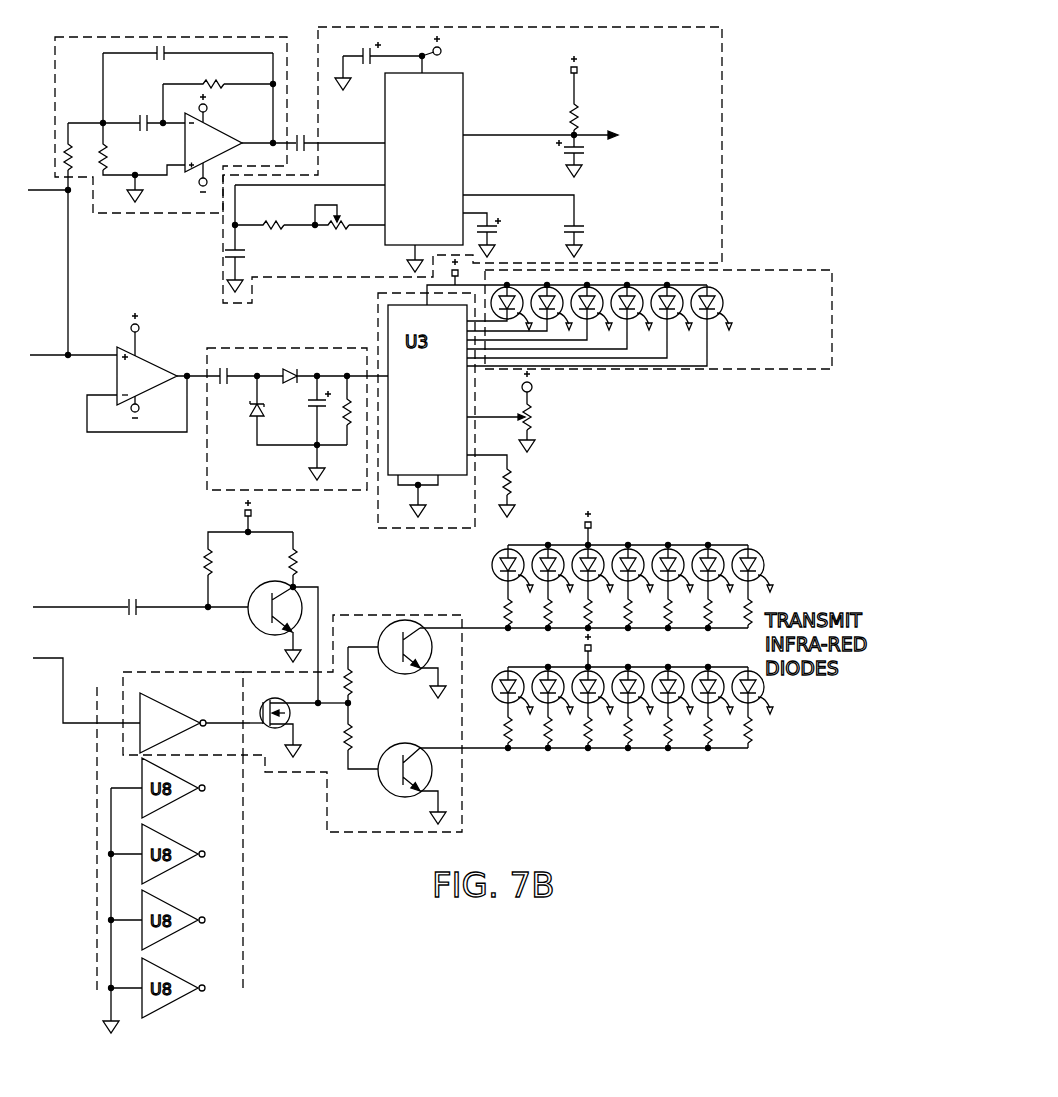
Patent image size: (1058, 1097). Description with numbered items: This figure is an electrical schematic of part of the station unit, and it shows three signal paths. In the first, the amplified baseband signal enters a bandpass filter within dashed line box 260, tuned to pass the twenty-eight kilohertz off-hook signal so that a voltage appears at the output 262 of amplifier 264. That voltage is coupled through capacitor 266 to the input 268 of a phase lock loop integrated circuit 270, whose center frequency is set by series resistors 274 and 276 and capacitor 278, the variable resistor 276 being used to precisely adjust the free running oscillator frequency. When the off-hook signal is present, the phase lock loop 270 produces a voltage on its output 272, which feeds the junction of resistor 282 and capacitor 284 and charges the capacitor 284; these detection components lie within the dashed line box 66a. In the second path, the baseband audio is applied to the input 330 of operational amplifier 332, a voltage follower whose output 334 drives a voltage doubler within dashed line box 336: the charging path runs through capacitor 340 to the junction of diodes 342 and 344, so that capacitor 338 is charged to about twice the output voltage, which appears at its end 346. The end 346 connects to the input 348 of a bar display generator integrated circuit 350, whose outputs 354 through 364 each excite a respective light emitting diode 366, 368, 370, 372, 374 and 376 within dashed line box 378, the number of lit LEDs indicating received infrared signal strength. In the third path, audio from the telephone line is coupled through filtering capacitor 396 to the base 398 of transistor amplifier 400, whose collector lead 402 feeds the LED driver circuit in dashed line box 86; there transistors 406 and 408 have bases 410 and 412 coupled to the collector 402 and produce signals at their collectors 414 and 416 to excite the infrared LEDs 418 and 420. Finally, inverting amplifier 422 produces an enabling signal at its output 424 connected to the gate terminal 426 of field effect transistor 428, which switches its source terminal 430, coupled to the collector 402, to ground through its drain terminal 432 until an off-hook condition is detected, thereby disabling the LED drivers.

The bandpass filter dashed line box 260 is at (237, 37).
The amplifier output 262 is at (250, 135).
The amplifier 264 is at (207, 121).
The capacitor 266 is at (305, 132).
The phase lock loop input 268 is at (310, 189).
The phase lock loop integrated circuit 270 is at (458, 92).
The phase lock loop output 272 is at (483, 135).
The series resistor 274 is at (274, 232).
The variable resistor 276 is at (340, 232).
The capacitor 278 is at (221, 253).
The resistor 282 is at (576, 113).
The capacitor 284 is at (585, 157).
The telephone line interface circuit 66a is at (722, 119).
The operational amplifier input 330 is at (94, 347).
The operational amplifier 332 is at (162, 393).
The amplifier output 334 is at (188, 372).
The voltage doubler circuit dashed line box 336 is at (207, 455).
The capacitor 338 is at (307, 405).
The capacitor 340 is at (226, 362).
The diode 342 is at (290, 362).
The diode 344 is at (252, 413).
The capacitor end 346 is at (340, 364).
The bar display generator input 348 is at (388, 378).
The bar display generator integrated circuit 350 is at (378, 316).
The bar display generator output 354 is at (477, 310).
The bar display generator output 364 is at (670, 368).
The light emitting diode 366 is at (502, 282).
The light emitting diode 368 is at (532, 285).
The light emitting diode 370 is at (587, 286).
The light emitting diode 372 is at (638, 286).
The light emitting diode 374 is at (665, 286).
The light emitting diode 376 is at (730, 321).
The LED dashed line box 378 is at (768, 373).
The filtering capacitor 396 is at (134, 599).
The transistor base 398 is at (243, 615).
The transistor amplifier 400 is at (274, 585).
The collector lead 402 is at (318, 586).
The transistor 406 is at (392, 636).
The transistor 408 is at (399, 743).
The transistor base 410 is at (372, 649).
The transistor base 412 is at (364, 767).
The transistor collector 414 is at (436, 625).
The transistor collector 416 is at (447, 742).
The LEDs 418 is at (543, 553).
The LEDs 420 is at (548, 676).
The inverting amplifier 422 is at (180, 697).
The inverting amplifier output 424 is at (232, 714).
The gate terminal 426 is at (253, 726).
The field effect transistor 428 is at (290, 714).
The source terminal 430 is at (303, 703).
The drain terminal 432 is at (295, 740).
The LED driver circuit dashed line box 86 is at (463, 798).